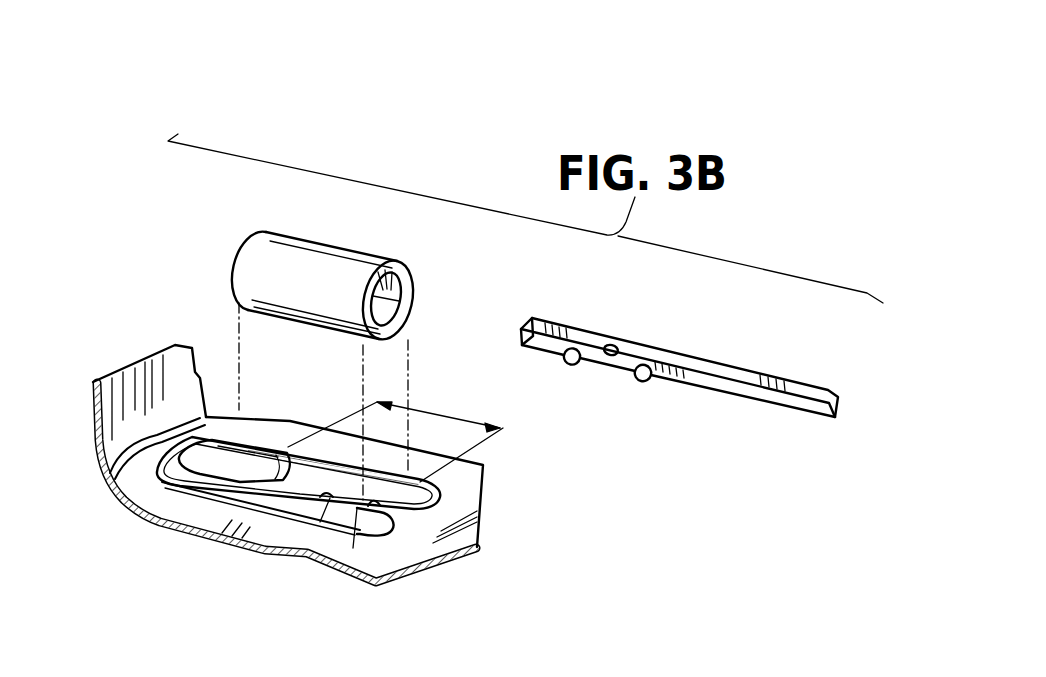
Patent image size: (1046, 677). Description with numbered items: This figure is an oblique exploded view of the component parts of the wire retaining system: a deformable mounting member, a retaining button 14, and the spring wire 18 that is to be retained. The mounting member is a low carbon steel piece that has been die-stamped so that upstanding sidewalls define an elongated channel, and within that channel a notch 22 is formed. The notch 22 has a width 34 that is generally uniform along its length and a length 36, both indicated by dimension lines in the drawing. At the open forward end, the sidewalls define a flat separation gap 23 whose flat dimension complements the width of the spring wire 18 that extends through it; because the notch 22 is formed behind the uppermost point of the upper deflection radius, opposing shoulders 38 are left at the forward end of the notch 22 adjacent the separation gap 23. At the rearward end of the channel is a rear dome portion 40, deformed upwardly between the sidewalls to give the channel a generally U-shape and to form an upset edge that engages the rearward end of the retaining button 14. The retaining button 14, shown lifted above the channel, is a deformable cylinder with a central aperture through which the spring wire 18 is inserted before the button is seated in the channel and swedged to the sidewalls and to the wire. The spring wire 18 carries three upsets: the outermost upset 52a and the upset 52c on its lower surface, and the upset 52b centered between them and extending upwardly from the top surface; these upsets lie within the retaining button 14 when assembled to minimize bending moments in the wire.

The retaining button 14 is at (333, 250).
The spring wire 18 is at (732, 364).
The notch 22 is at (300, 558).
The flat separation gap 23 is at (478, 544).
The width of notch 34 is at (203, 534).
The length of notch 36 is at (433, 418).
The opposing shoulders 38 is at (375, 506).
The rear dome portion 40 is at (197, 460).
The outermost upset 52a is at (568, 360).
The upset 52b is at (621, 347).
The upset 52c is at (644, 374).